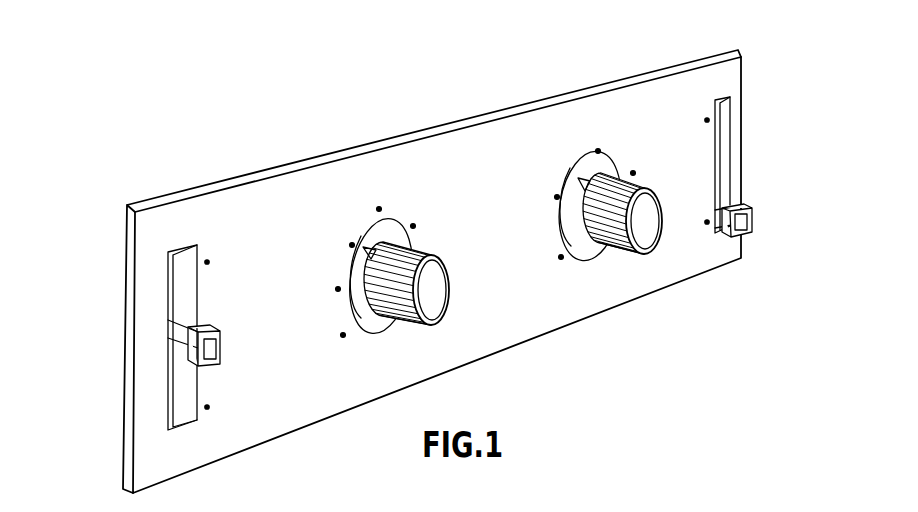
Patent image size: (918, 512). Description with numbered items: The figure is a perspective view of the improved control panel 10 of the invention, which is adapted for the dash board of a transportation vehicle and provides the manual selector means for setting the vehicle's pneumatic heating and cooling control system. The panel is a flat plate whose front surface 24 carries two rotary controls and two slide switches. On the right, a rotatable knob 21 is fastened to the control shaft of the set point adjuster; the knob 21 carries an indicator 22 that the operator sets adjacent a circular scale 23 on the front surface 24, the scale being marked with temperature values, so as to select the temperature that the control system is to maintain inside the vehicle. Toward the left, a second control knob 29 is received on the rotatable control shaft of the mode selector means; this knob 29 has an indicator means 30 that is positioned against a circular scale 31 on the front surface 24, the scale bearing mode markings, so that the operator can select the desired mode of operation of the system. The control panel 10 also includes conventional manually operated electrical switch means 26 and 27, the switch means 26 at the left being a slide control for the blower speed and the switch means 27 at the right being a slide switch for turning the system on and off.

The control panel 10 is at (580, 56).
The rotatable knob 21 is at (616, 251).
The indicator 22 is at (585, 192).
The circular scale 23 is at (613, 135).
The front surface 24 is at (677, 266).
The manually operated electrical switch means 26 is at (184, 342).
The manually operated electrical switch means 27 is at (740, 208).
The control knob 29 is at (397, 325).
The indicator means 30 is at (362, 262).
The circular scale 31 is at (343, 229).